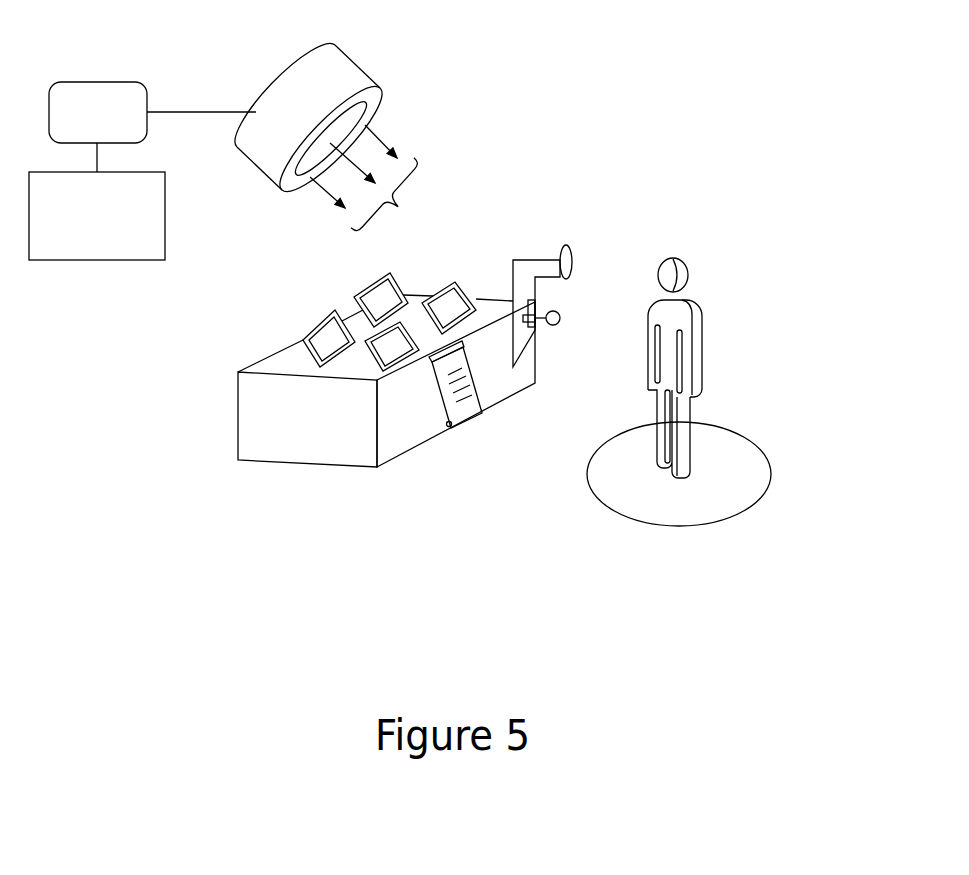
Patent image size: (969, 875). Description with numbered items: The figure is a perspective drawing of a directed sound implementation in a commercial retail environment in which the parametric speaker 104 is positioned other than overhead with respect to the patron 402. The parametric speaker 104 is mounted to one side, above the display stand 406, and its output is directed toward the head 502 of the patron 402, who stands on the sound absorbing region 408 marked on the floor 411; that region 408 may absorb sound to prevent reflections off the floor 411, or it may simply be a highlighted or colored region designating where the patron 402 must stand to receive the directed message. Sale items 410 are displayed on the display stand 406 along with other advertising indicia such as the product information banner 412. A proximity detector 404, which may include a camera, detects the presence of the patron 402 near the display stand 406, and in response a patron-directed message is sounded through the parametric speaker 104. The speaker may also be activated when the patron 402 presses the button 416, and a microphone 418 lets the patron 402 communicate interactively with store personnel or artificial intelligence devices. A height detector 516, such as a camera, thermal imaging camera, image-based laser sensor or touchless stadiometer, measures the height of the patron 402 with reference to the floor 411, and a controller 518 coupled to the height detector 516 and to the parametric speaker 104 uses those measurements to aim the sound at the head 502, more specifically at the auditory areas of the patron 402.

The parametric speaker 104 is at (347, 67).
The patron 402 is at (722, 357).
The proximity detector 404 is at (516, 258).
The display stand 406 is at (240, 372).
The sound absorbing region 408 is at (773, 476).
The sale items 410 is at (433, 285).
The floor 411 is at (558, 568).
The product information banner 412 is at (437, 410).
The button 416 is at (398, 207).
The microphone 418 is at (555, 327).
The head 502 is at (689, 273).
The height detector 516 is at (97, 81).
The controller 518 is at (97, 260).